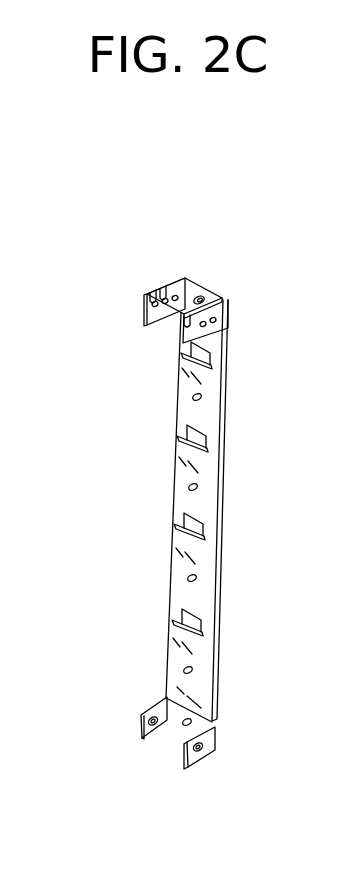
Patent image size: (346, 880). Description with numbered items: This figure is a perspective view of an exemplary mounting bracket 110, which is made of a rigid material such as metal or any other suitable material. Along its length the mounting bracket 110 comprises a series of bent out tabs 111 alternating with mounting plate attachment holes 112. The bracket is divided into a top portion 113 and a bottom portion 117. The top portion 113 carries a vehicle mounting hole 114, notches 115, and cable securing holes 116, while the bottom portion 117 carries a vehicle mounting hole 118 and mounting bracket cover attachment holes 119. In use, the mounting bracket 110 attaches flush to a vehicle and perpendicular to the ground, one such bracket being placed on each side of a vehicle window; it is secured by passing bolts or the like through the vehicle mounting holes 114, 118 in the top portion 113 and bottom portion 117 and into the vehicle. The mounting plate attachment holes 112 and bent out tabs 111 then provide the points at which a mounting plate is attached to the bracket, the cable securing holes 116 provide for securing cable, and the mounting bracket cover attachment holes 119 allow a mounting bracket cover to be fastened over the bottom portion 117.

The mounting bracket 110 is at (104, 218).
The bent out tabs 111 is at (212, 355).
The mounting plate attachment holes 112 is at (192, 397).
The top portion 113 is at (196, 281).
The vehicle mounting hole 114 is at (203, 297).
The notch 115 is at (147, 298).
The cable securing hole 116 is at (167, 292).
The bottom portion 117 is at (215, 738).
The vehicle mounting hole 118 is at (183, 726).
The mounting bracket cover attachment hole 119 is at (141, 716).